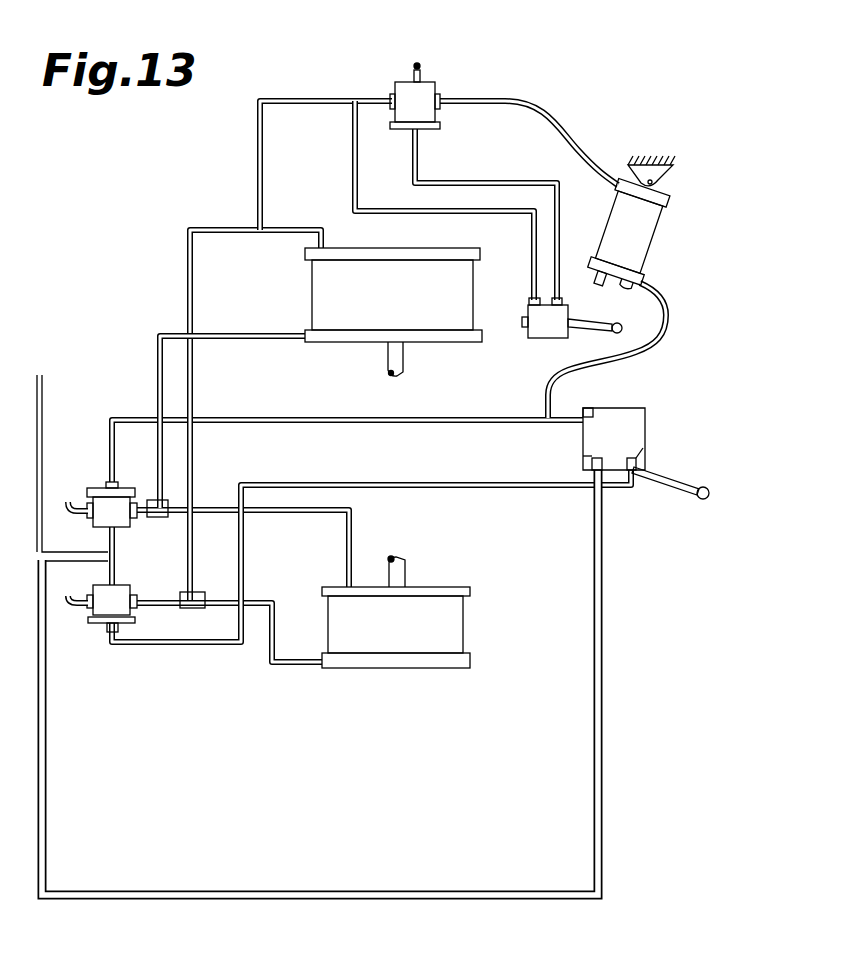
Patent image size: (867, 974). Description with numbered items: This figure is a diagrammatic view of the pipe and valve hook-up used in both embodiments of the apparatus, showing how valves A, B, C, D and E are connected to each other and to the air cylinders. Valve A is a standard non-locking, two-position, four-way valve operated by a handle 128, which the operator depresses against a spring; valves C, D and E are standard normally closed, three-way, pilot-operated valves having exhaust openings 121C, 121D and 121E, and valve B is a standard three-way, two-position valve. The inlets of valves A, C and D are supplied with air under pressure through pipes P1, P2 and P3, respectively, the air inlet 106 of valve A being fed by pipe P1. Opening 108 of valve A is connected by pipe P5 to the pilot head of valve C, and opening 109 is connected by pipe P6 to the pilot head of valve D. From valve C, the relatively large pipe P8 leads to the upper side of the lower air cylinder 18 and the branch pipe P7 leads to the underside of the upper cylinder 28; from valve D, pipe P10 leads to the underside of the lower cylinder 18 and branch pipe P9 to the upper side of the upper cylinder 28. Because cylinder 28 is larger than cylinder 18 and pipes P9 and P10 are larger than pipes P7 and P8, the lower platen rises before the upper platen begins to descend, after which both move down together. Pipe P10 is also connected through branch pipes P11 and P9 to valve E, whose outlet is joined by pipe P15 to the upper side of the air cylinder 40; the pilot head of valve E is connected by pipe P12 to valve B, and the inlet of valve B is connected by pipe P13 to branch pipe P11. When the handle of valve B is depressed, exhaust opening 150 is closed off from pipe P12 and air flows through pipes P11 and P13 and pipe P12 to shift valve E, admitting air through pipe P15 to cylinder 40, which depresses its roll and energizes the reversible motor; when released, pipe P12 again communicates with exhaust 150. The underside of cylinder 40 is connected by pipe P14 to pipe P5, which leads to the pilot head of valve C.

The pipe P1 is at (38, 420).
The pipe P2 is at (115, 543).
The pipe P3 is at (116, 570).
The pipe P5 is at (408, 433).
The pipe P6 is at (173, 643).
The branch pipe P7 is at (155, 373).
The pipe P8 is at (273, 512).
The branch pipe P9 is at (190, 278).
The pipe P10 is at (277, 633).
The branch pipe P11 is at (364, 101).
The pipe P12 is at (497, 160).
The pipe P13 is at (386, 211).
The pipe P14 is at (667, 298).
The pipe P15 is at (506, 98).
The lower air cylinder 18 is at (396, 612).
The upper cylinder 28 is at (393, 312).
The air cylinder 40 is at (629, 226).
The air inlet 106 is at (592, 456).
The opening 108 is at (588, 408).
The opening 109 is at (643, 448).
The exhaust opening 121C is at (63, 507).
The exhaust opening 121D is at (67, 604).
The exhaust opening 121E is at (416, 66).
The handle 128 is at (688, 497).
The exhaust opening 150 is at (523, 337).
The valve A is at (614, 439).
The valve B is at (575, 318).
The valve C is at (102, 529).
The valve D is at (102, 614).
The valve E is at (415, 105).